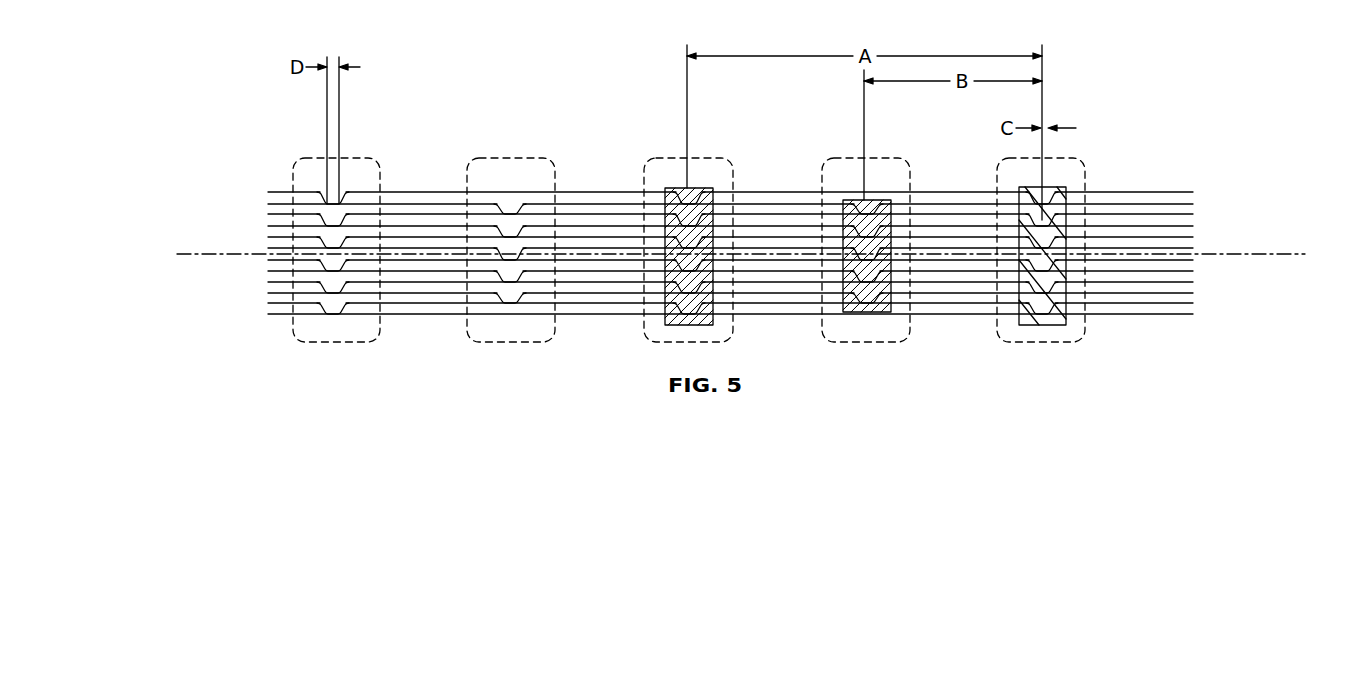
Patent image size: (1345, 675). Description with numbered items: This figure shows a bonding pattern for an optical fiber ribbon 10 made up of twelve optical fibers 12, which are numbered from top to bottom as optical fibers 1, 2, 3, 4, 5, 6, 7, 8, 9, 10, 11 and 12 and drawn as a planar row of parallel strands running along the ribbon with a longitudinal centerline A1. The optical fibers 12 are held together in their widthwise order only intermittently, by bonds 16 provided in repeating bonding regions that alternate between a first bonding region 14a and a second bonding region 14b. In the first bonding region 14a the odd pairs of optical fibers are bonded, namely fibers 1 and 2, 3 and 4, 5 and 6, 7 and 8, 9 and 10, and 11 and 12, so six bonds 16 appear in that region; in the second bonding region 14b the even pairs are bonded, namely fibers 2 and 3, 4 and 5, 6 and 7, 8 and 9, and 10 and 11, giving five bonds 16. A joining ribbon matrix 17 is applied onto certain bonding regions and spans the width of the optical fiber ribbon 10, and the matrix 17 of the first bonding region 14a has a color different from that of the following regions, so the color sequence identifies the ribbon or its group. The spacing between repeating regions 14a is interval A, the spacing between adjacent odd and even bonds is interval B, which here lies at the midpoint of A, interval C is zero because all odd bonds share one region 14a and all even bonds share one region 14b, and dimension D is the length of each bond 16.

The optical fiber 1 is at (268, 192).
The optical fiber 2 is at (268, 204).
The optical fiber 3 is at (268, 214).
The optical fiber 4 is at (268, 226).
The optical fiber 5 is at (268, 237).
The optical fiber 6 is at (268, 248).
The optical fiber 7 is at (268, 260).
The optical fiber 8 is at (268, 271).
The optical fiber 9 is at (268, 282).
The optical fiber ribbon 10 is at (268, 293).
The optical fiber 11 is at (268, 303).
The optical fibers 12 is at (268, 314).
The first bonding region 14a is at (357, 158).
The second bonding region 14b is at (522, 158).
The bonds 16 is at (352, 246).
The joining ribbon matrix 17 is at (713, 325).
The central axis A1 is at (755, 254).